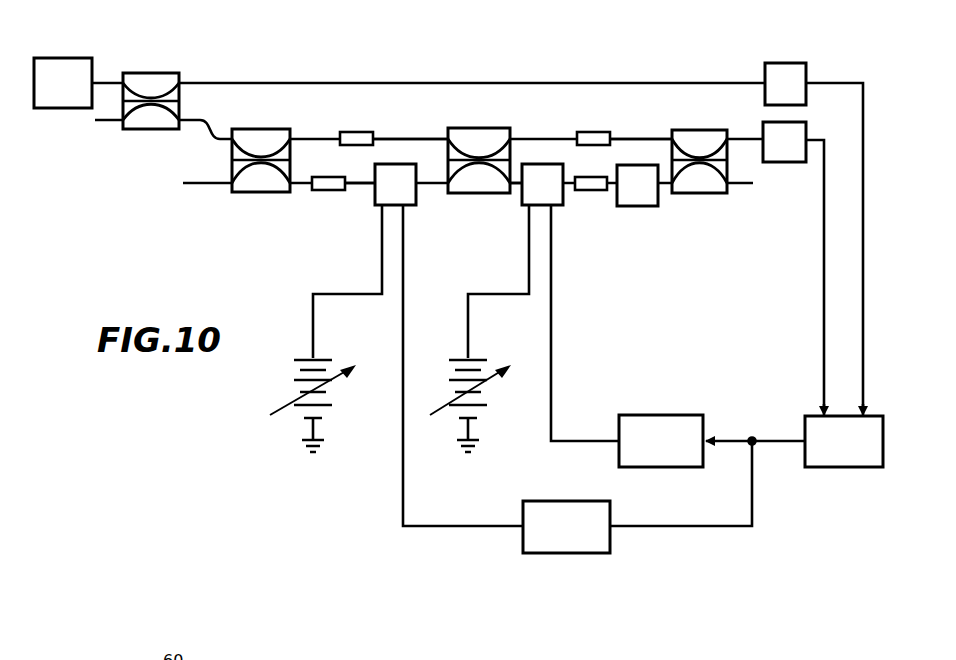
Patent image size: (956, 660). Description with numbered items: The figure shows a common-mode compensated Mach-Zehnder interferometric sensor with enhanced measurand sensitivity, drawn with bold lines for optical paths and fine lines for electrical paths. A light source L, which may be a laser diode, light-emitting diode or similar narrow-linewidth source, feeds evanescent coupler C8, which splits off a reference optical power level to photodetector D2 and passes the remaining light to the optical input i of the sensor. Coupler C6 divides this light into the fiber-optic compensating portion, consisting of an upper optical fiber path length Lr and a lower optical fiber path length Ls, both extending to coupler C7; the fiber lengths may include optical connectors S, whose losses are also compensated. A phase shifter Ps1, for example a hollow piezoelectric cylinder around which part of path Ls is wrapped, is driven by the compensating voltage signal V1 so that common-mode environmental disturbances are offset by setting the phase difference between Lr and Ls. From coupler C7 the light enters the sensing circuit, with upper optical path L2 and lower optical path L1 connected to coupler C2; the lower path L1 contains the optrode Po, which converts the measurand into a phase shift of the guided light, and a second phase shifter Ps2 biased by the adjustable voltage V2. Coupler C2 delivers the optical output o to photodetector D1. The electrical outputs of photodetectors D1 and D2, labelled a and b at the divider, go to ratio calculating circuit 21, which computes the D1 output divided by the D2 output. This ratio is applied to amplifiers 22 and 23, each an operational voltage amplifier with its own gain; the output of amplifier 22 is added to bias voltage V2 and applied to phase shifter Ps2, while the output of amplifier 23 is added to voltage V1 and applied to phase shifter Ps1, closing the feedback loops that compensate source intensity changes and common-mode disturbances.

The ratio calculating circuit 21 is at (848, 468).
The amplifier 22 is at (661, 415).
The amplifier 23 is at (565, 501).
The light source L is at (63, 83).
The evanescent coupler C8 is at (152, 73).
The evanescent coupler C6 is at (262, 129).
The evanescent coupler C7 is at (475, 128).
The evanescent coupler C2 is at (695, 130).
The optical connectors S is at (351, 131).
The upper optical fiber path length Lr is at (405, 135).
The lower optical fiber path length Ls is at (358, 185).
The lower optical path L1 is at (513, 185).
The upper optical path L2 is at (640, 133).
The phase shifter Ps1 is at (395, 184).
The phase shifter Ps2 is at (542, 184).
The optrode Po is at (637, 185).
The photodetector D1 is at (784, 142).
The photodetector D2 is at (785, 84).
The compensating voltage signal V1 is at (290, 390).
The adjustable bias voltage signal V2 is at (450, 390).
The optical input i is at (216, 126).
The optical output o is at (755, 139).
The signal a is at (817, 396).
The signal b is at (866, 396).